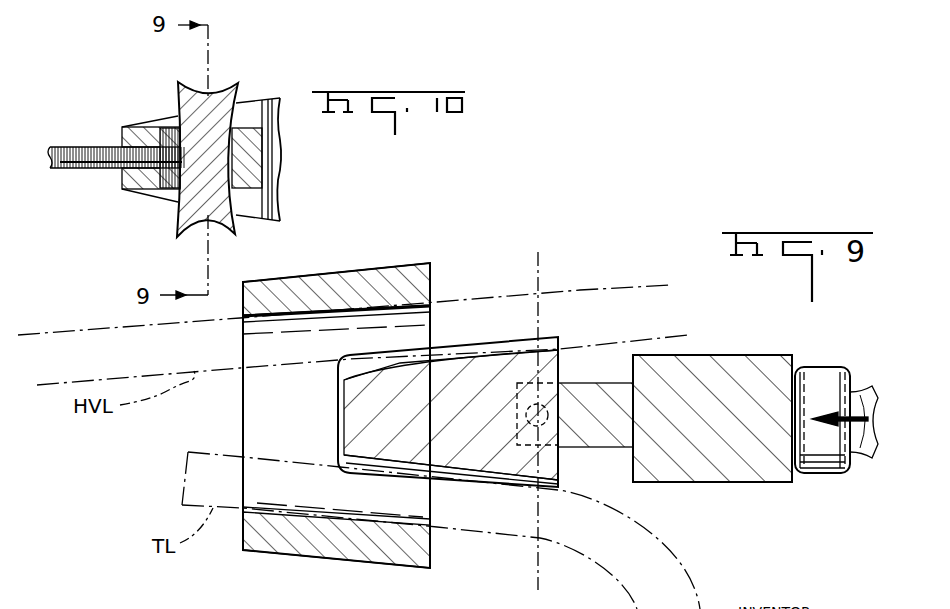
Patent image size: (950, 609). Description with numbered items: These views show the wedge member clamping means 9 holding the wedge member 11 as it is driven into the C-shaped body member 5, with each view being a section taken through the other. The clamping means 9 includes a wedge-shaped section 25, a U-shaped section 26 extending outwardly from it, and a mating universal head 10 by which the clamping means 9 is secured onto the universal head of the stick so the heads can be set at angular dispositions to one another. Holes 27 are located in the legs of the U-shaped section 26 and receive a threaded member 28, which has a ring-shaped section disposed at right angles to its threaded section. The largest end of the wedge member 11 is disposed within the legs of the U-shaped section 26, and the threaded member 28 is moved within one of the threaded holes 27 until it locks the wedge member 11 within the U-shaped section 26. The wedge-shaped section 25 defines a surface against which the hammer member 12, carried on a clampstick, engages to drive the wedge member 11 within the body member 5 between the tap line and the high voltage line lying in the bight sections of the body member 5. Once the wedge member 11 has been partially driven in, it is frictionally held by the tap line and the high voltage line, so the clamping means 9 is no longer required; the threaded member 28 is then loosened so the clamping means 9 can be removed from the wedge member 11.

In FIG. 9, the C-shaped body member 5 is at (376, 275).
In FIG. 10, the wedge member clamping means 9 is at (282, 98).
In FIG. 9, the wedge member clamping means 9 is at (734, 358).
In FIG. 9, the mating universal head 10 is at (538, 252).
In FIG. 10, the wedge member 11 is at (236, 86).
In FIG. 9, the wedge member 11 is at (350, 413).
In FIG. 9, the hammer member 12 is at (828, 470).
In FIG. 9, the wedge-shaped section 25 is at (724, 470).
In FIG. 10, the U-shaped section 26 is at (136, 129).
In FIG. 9, the U-shaped section 26 is at (597, 398).
In FIG. 10, the holes 27 is at (162, 192).
In FIG. 10, the threaded member 28 is at (88, 173).